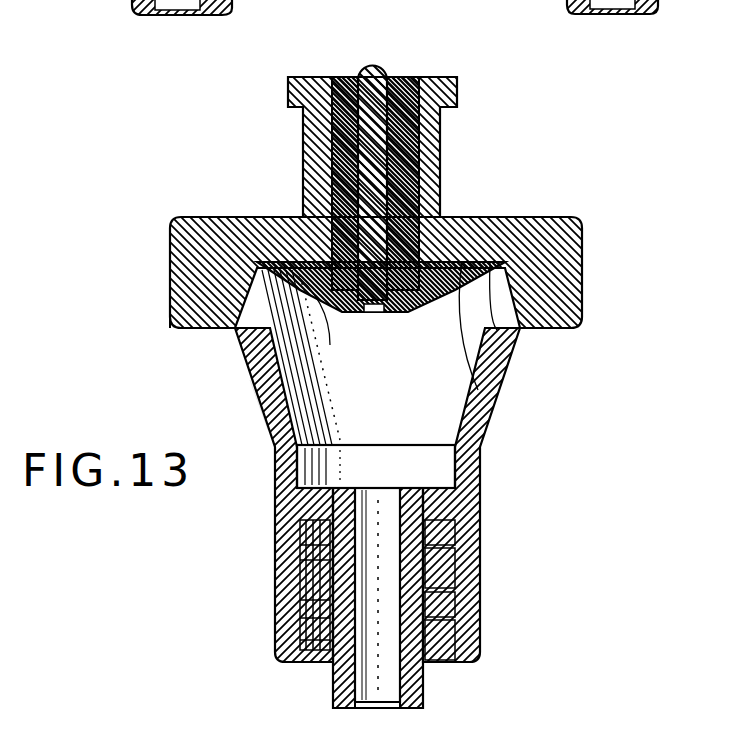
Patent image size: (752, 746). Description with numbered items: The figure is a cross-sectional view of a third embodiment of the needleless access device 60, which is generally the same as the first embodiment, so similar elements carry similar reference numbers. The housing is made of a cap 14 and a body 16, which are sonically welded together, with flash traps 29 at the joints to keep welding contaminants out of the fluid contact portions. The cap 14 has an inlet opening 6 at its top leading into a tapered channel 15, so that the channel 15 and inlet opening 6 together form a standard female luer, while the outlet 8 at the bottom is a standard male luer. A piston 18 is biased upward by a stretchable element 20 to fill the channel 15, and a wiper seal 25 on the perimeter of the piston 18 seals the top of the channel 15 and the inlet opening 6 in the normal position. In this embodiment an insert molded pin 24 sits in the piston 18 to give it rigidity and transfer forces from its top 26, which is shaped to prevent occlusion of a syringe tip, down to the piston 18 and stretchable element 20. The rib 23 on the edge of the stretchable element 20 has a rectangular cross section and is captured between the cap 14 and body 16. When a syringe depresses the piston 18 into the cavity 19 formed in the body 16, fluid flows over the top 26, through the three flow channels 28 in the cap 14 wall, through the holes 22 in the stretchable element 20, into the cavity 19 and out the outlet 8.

The inlet opening 6 is at (419, 77).
The outlet 8 is at (420, 705).
The cap 14 is at (556, 217).
The channel 15 is at (305, 130).
The body 16 is at (265, 415).
The piston 18 is at (443, 145).
The cavity 19 is at (440, 410).
The stretchable element 20 is at (170, 315).
The holes 22 is at (243, 372).
The rib 23 is at (170, 258).
The pin 24 is at (305, 192).
The wiper seal 25 is at (290, 88).
The top of pin 26 is at (372, 65).
The flow channels 28 is at (430, 222).
The flash traps 29 is at (583, 278).
The needleless access device 60 is at (500, 556).